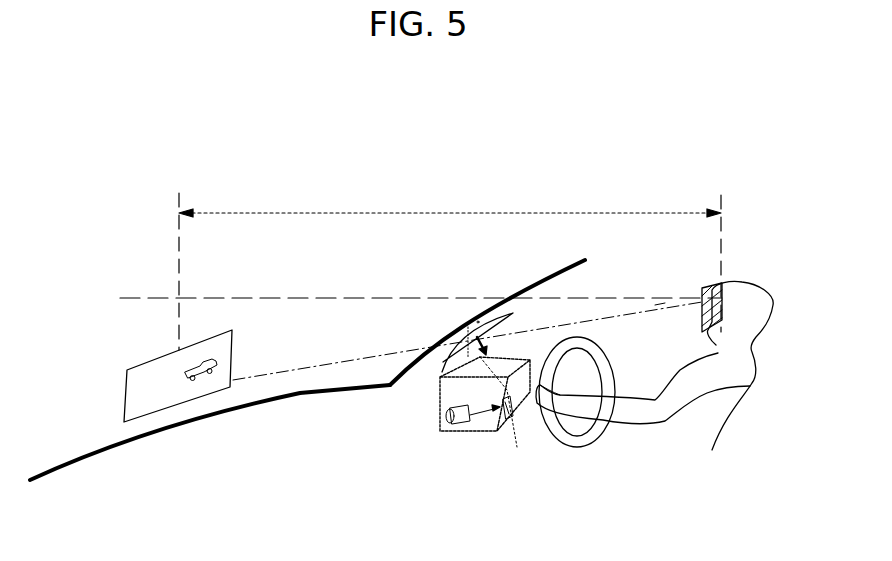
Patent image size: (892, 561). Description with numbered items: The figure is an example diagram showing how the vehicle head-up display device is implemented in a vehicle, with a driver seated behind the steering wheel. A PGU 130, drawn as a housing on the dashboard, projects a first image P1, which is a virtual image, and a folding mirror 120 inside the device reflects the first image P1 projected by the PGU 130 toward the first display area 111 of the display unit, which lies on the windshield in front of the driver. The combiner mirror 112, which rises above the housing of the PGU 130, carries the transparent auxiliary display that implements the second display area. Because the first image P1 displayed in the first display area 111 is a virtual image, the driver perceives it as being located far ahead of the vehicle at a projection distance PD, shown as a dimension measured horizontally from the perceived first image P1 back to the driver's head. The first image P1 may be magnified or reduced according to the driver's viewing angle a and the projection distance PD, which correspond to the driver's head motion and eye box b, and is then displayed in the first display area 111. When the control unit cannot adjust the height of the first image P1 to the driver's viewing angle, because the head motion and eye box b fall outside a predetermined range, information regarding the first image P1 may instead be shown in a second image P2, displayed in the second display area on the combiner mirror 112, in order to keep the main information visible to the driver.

The first display area 111 is at (438, 342).
The combiner 112 is at (490, 355).
The folding mirror 120 is at (517, 447).
The PGU 130 is at (440, 410).
The first image P1 is at (143, 378).
The second image P2 is at (478, 322).
The projection distance PD is at (450, 199).
The viewing angle a is at (702, 283).
The eye box b is at (767, 290).